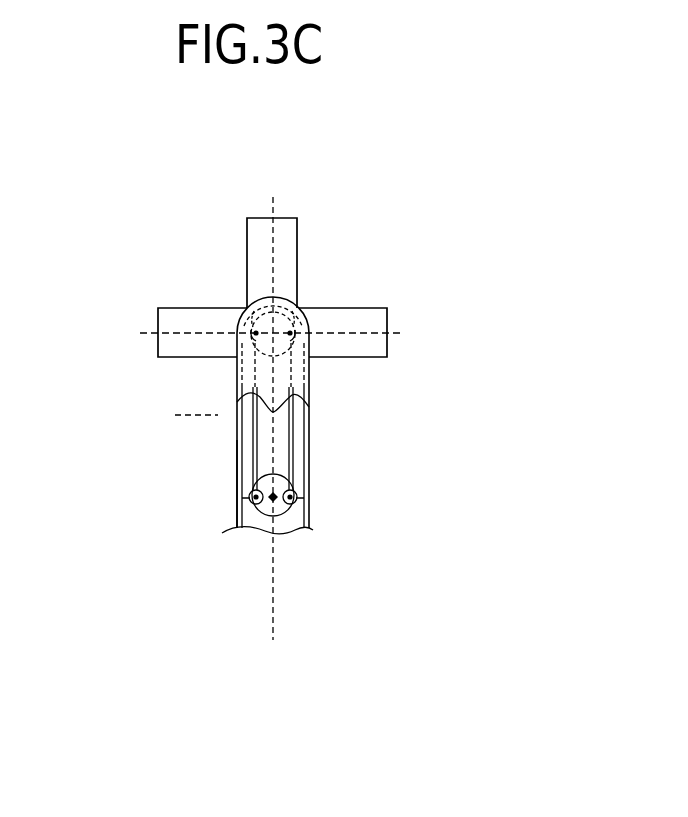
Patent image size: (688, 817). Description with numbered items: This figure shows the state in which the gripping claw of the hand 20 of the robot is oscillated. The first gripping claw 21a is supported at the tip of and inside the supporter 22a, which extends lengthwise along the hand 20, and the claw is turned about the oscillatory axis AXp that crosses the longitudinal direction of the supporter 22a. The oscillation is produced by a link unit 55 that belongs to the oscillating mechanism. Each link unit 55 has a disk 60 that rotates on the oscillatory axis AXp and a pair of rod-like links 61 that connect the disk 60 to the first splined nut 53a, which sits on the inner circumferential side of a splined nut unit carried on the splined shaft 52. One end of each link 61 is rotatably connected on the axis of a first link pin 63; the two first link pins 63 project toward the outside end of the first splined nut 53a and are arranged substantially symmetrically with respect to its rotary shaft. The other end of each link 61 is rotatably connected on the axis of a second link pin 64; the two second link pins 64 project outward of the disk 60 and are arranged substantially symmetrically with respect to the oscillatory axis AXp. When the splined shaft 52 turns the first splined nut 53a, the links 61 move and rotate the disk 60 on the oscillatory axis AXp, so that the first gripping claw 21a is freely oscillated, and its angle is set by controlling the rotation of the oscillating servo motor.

The hand 20 is at (182, 205).
The first gripping claw 21a is at (178, 322).
The disk 60 is at (283, 295).
The second link pin 64 is at (248, 304).
The oscillatory axis AXp is at (271, 335).
The link unit 55 is at (222, 440).
The link 61 is at (248, 445).
The supporter 22a is at (238, 478).
The first link pin 63 is at (254, 499).
The splined shaft 52 is at (275, 500).
The first splined nut 53a is at (265, 514).